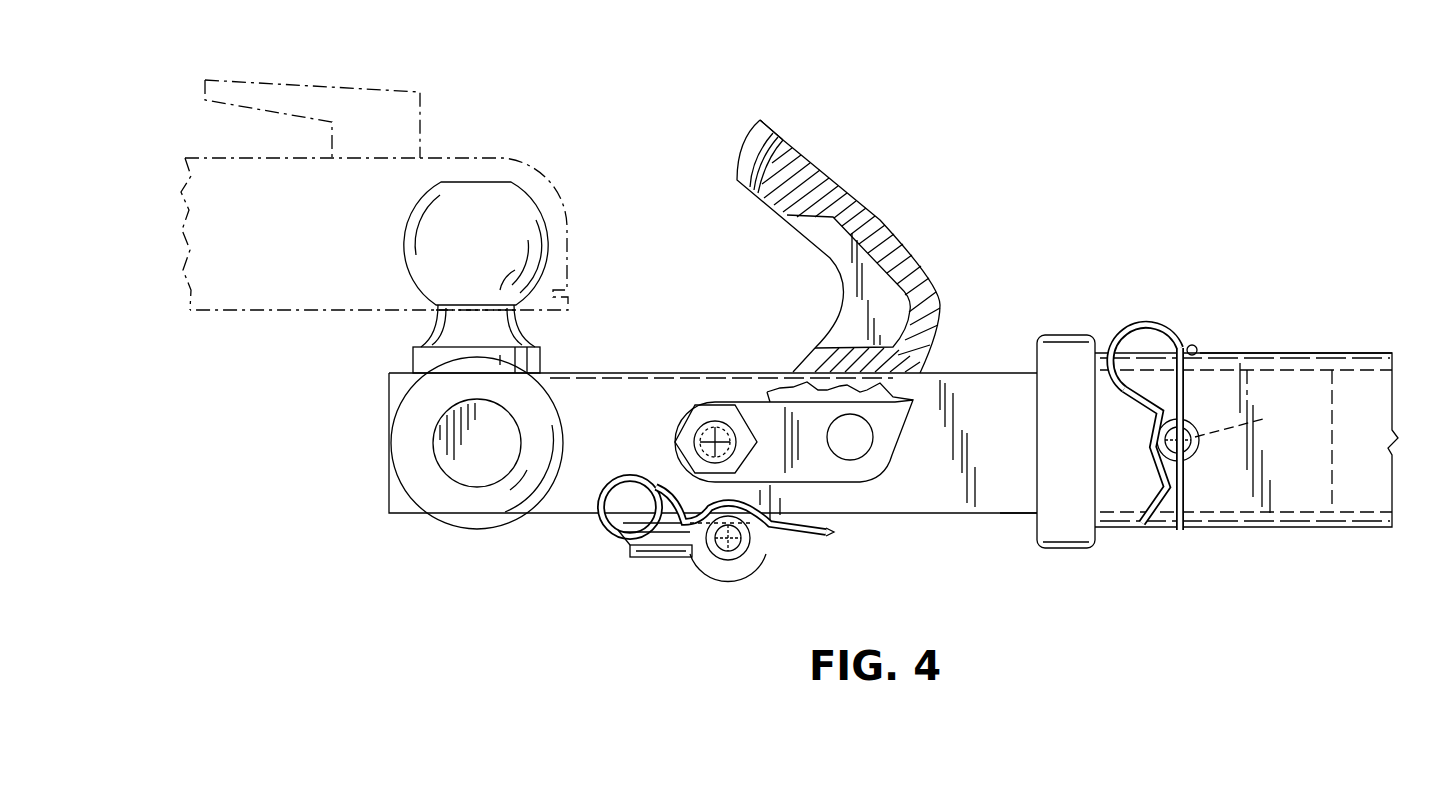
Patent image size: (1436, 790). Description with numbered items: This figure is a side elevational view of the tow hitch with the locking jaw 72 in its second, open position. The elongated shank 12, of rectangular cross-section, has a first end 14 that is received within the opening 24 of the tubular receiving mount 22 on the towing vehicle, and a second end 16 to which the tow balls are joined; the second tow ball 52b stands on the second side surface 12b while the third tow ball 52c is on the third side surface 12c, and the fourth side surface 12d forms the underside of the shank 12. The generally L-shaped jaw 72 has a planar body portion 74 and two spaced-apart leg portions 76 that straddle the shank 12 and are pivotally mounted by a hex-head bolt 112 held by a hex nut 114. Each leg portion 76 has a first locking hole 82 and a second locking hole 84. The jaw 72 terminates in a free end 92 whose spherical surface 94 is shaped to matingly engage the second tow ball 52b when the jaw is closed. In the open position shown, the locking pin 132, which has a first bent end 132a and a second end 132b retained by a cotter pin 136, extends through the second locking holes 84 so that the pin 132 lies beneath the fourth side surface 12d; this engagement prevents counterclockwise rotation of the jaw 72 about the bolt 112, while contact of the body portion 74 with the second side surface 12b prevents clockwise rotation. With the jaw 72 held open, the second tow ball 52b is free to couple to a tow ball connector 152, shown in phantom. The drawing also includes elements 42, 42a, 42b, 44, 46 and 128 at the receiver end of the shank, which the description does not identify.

The tow ball connector 152 is at (453, 155).
The second tow ball 52b is at (527, 213).
The third tow ball 52c is at (460, 522).
The shank 12 is at (613, 366).
The second side surface 12b is at (978, 356).
The third side surface 12c is at (1000, 400).
The fourth side surface 12d is at (978, 517).
The second end 16 is at (389, 510).
The locking jaw 72 is at (811, 234).
The body portion 74 is at (873, 226).
The free end 92 is at (783, 140).
The surface 94 is at (765, 160).
The leg portion 76 is at (898, 405).
The first locking hole 82 is at (860, 444).
The hex-head bolt 112 is at (706, 428).
The hex nut 114 is at (721, 425).
The second locking hole 84 is at (745, 552).
The locking pin 132 is at (679, 558).
The first bent end 132a is at (630, 560).
The second end 132b is at (722, 548).
The cotter pin 136 is at (604, 528).
The first end 14 is at (1311, 505).
The receiving mount 22 is at (1300, 352).
The opening 24 is at (1355, 385).
The pin axis 44 is at (1267, 418).
The hairpin clip 42 is at (1172, 395).
The clip bend 42a is at (1188, 343).
The clip straight leg 42b is at (1192, 458).
The clip loop 46 is at (1125, 330).
The retaining pin 128 is at (1191, 427).